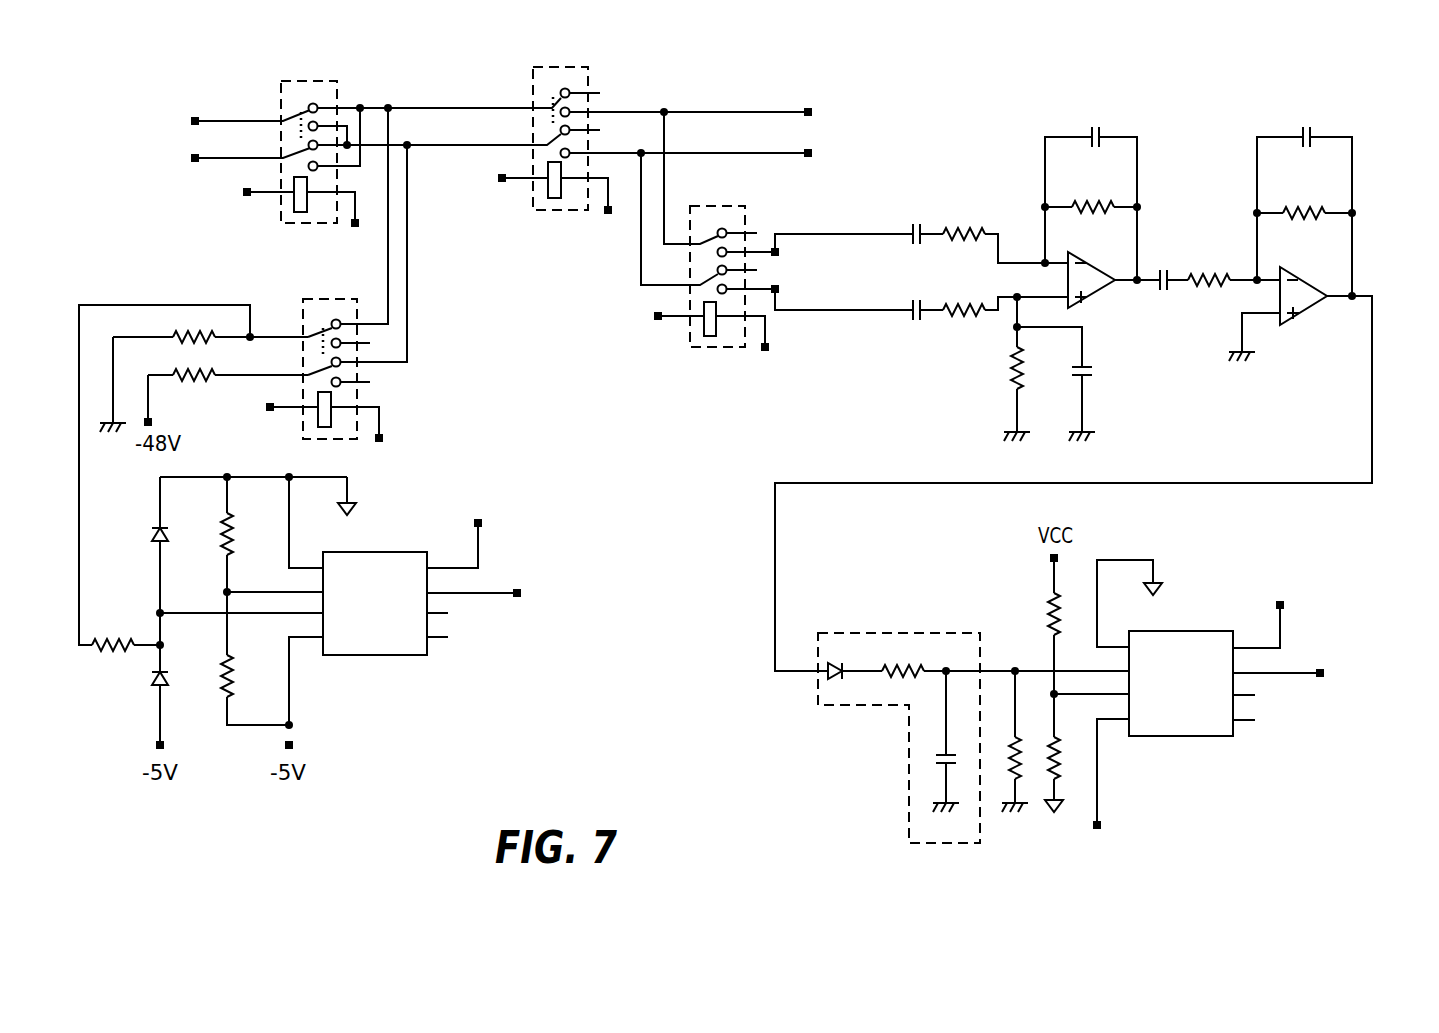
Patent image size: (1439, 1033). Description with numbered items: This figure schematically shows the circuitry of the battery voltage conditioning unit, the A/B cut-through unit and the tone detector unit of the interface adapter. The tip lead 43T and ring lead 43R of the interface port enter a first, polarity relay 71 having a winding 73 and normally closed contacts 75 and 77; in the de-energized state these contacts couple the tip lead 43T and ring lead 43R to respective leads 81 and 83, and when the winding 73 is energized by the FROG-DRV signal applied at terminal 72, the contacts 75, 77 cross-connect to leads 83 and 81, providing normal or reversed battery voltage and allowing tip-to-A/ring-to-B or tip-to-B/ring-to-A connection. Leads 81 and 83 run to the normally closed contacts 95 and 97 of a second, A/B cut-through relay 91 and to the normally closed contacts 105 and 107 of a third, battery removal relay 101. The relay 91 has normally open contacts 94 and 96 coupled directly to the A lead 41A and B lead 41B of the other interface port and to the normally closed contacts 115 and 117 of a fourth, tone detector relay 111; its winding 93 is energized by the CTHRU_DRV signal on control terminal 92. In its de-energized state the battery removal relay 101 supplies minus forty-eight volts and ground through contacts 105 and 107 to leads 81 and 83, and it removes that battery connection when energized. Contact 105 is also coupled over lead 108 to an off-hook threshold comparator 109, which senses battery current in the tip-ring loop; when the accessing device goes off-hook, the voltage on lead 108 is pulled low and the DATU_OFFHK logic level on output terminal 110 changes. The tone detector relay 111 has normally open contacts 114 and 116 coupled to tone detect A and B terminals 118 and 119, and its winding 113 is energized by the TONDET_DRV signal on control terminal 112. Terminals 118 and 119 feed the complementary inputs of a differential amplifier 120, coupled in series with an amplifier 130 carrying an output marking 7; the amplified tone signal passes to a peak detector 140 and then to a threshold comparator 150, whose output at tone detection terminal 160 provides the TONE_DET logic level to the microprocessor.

The tip lead 43T is at (193, 113).
The ring lead 43R is at (193, 164).
The polarity relay 71 is at (320, 159).
The terminal 72 is at (359, 225).
The winding 73 is at (292, 204).
The normally closed contact 75 is at (320, 104).
The normally closed contact 77 is at (320, 169).
The lead 81 is at (447, 106).
The lead 83 is at (424, 143).
The A/B cut-through relay 91 is at (553, 141).
The control terminal 92 is at (613, 210).
The winding 93 is at (548, 190).
The normally open contact 94 is at (558, 117).
The normally closed contact 95 is at (570, 91).
The normally open contact 96 is at (560, 156).
The normally closed contact 97 is at (594, 130).
The A lead 41A is at (808, 107).
The B lead 41B is at (808, 159).
The battery removal relay 101 is at (335, 369).
The normally closed contact 105 is at (339, 318).
The normally closed contact 107 is at (407, 352).
The lead 108 is at (270, 333).
The off-hook threshold comparator 109 is at (404, 656).
The output terminal 110 is at (518, 589).
The tone detector relay 111 is at (710, 286).
The control terminal 112 is at (770, 346).
The winding 113 is at (700, 327).
The normally open contact 114 is at (715, 255).
The normally closed contact 115 is at (735, 229).
The normally open contact 116 is at (718, 294).
The normally closed contact 117 is at (756, 272).
The tone detect A terminal 118 is at (778, 247).
The tone detect B terminal 119 is at (780, 296).
The differential amplifier 120 is at (1100, 303).
The amplifier 130 is at (1302, 318).
The amplifier output pin 7 is at (1337, 283).
The peak detector 140 is at (930, 633).
The threshold comparator 150 is at (1208, 737).
The tone detection terminal 160 is at (1322, 668).